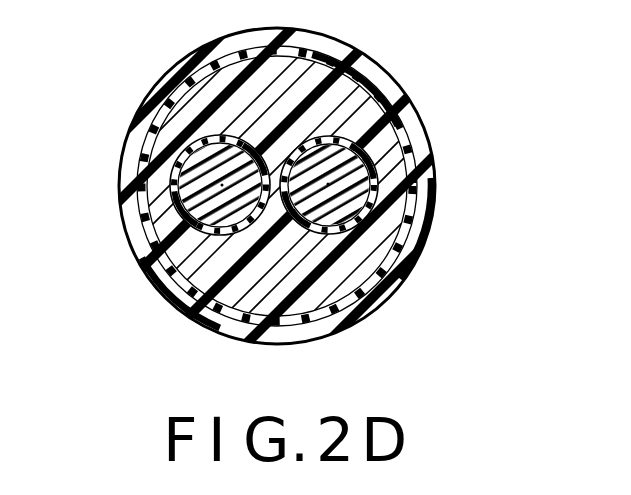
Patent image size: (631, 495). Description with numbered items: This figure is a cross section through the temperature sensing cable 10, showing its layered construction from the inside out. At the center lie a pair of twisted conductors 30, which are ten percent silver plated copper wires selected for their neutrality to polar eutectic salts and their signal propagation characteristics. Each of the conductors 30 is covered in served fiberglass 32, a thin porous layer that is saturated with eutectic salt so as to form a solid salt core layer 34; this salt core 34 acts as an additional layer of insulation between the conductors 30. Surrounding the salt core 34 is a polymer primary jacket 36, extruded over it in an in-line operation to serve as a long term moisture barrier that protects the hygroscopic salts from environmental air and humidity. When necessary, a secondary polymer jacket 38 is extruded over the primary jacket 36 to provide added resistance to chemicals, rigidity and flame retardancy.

The temperature sensing cable 10 is at (184, 44).
The conductors 30 is at (178, 153).
The fiberglass 32 is at (408, 158).
The salt core layer 34 is at (375, 222).
The primary jacket 36 is at (375, 303).
The secondary jacket 38 is at (148, 267).